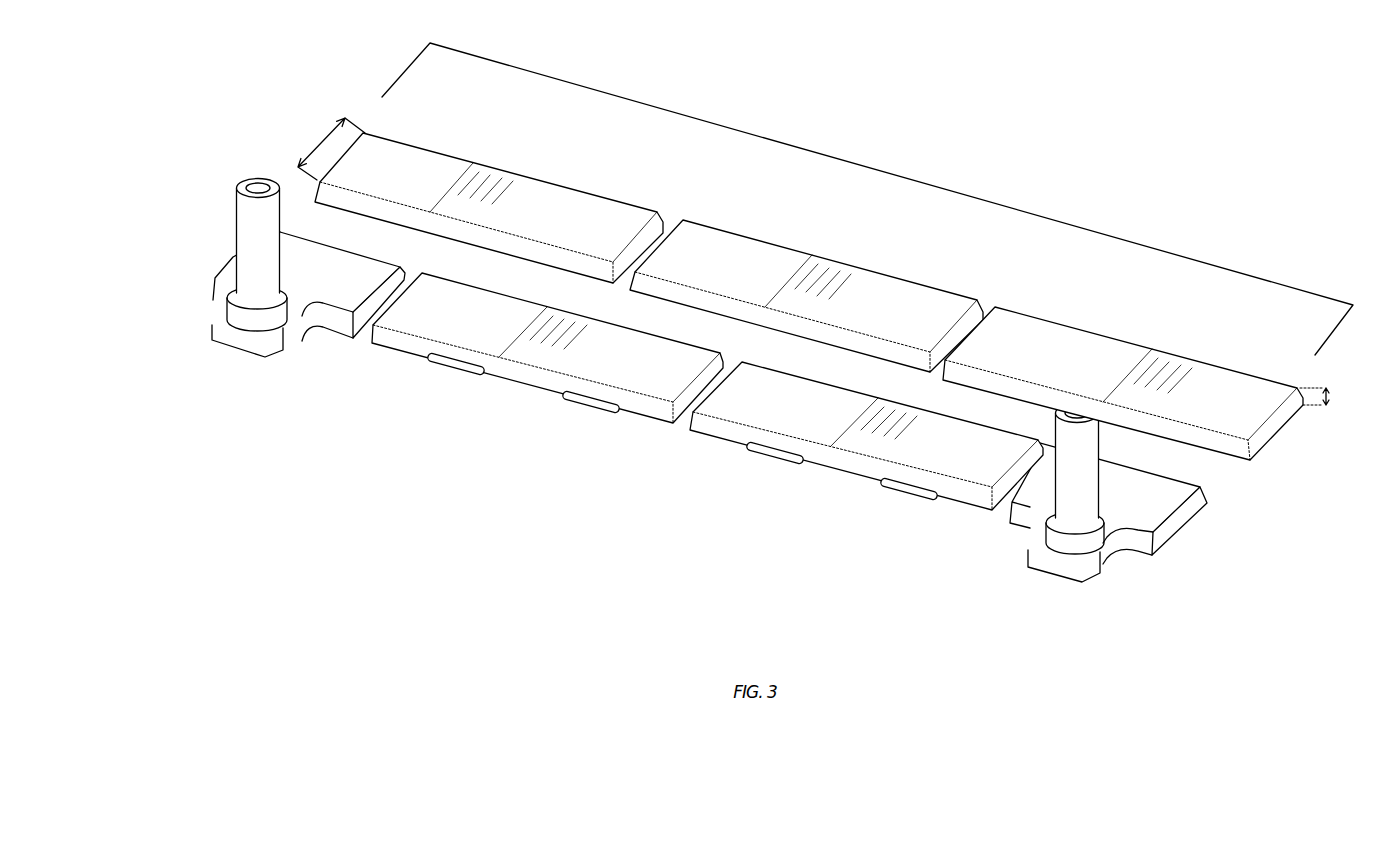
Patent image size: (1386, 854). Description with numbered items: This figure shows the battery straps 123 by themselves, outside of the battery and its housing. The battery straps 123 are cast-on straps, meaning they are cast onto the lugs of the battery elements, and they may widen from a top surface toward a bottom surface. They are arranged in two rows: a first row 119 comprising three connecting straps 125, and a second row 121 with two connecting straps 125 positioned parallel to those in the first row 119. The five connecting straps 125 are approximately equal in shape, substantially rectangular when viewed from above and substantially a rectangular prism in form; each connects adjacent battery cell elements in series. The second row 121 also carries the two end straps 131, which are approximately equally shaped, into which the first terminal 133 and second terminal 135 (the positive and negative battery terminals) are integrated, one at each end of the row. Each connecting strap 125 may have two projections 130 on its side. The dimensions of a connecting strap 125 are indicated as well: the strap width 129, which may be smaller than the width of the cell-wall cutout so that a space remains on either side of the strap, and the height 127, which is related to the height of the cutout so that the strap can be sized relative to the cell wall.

The first row 119 is at (243, 104).
The second row 121 is at (661, 406).
The battery straps 123 is at (836, 157).
The connecting straps 125 is at (809, 349).
The height 127 is at (1328, 388).
The strap width 129 is at (317, 149).
The projections 130 is at (447, 368).
The end strap 131 is at (237, 265).
The first terminal 133 is at (253, 265).
The second terminal 135 is at (1078, 507).